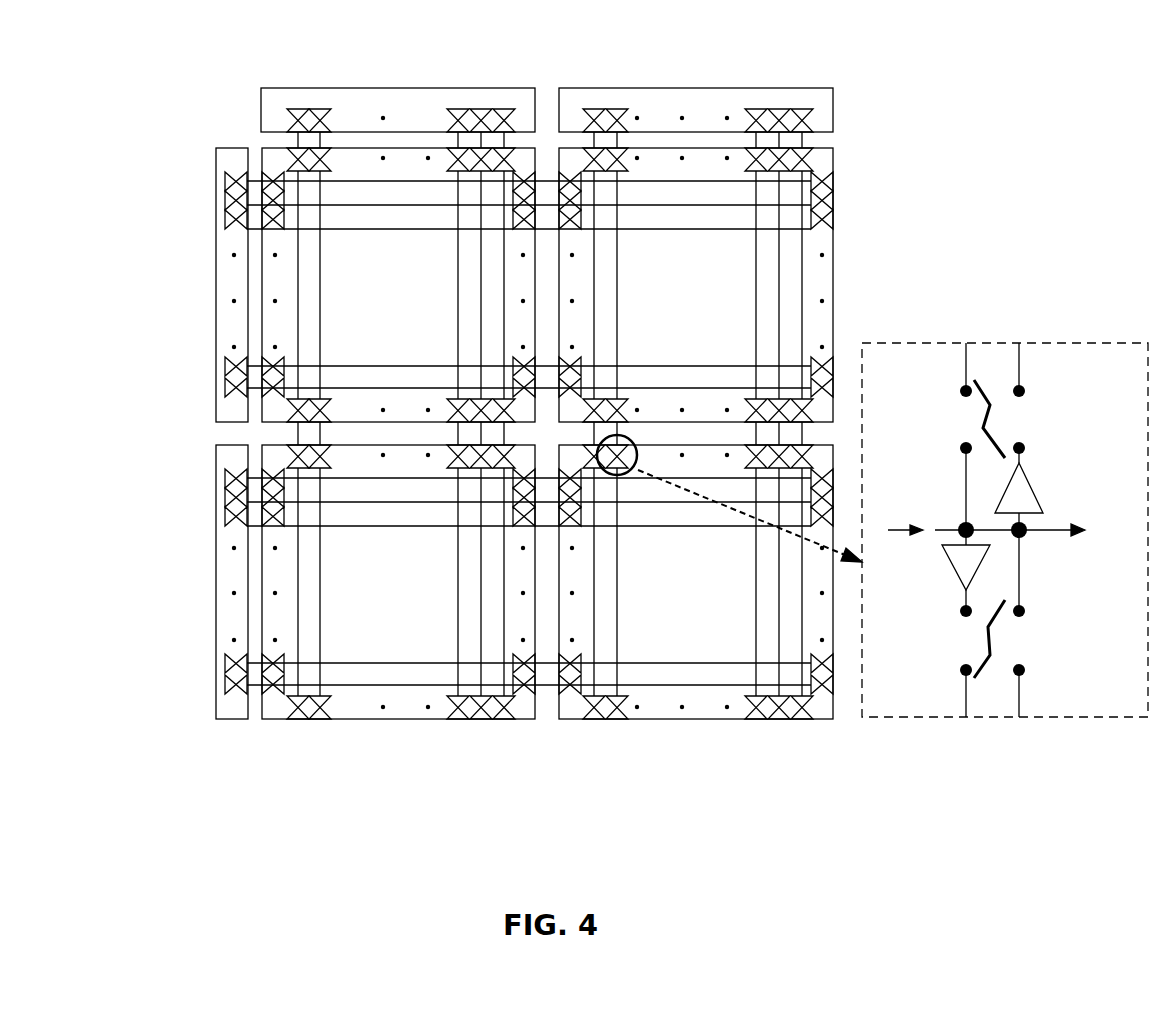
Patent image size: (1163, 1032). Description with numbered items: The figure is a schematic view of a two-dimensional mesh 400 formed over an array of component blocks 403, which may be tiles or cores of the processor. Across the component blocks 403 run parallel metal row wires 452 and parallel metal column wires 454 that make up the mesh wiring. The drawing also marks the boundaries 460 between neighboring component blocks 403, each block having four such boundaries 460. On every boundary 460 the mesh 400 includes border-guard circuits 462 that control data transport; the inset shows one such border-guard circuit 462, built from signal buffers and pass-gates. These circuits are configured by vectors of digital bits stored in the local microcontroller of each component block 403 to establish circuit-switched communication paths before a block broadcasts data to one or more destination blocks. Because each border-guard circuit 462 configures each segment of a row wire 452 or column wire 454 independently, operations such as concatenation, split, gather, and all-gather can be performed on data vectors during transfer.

The 2D mesh 400 is at (217, 42).
The component block 403 is at (410, 342).
The metal row wire 452 is at (330, 686).
The metal column wire 454 is at (503, 295).
The boundary 460 is at (658, 147).
The border-guard circuit 462 is at (1120, 402).